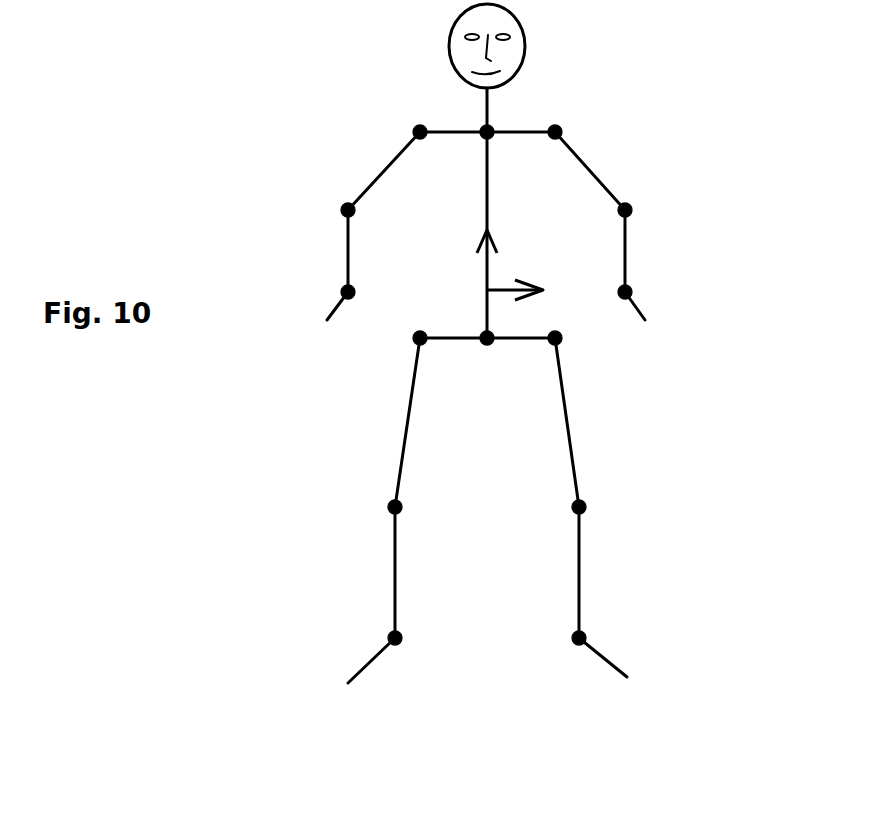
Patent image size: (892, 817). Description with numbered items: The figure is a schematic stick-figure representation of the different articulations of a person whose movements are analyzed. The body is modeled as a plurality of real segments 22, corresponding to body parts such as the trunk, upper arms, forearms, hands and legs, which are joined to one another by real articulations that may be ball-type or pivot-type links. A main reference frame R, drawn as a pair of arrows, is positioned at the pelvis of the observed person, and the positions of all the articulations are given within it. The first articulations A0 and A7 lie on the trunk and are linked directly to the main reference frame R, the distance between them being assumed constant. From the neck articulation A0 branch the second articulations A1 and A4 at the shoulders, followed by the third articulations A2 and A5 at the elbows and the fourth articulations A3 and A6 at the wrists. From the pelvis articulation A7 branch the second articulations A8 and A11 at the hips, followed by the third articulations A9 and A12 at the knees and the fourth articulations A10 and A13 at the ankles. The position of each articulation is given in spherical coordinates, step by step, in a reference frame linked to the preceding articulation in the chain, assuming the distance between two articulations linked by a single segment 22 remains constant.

The real segment 22 is at (620, 164).
The main reference frame R is at (487, 268).
The first articulation A0 is at (500, 126).
The second articulation A1 is at (415, 128).
The third articulation A2 is at (343, 212).
The fourth articulation A3 is at (343, 294).
The second articulation A4 is at (567, 127).
The third articulation A5 is at (633, 212).
The fourth articulation A6 is at (635, 297).
The first articulation A7 is at (488, 346).
The second articulation A8 is at (415, 340).
The third articulation A9 is at (390, 508).
The fourth articulation A10 is at (390, 642).
The second articulation A11 is at (565, 340).
The third articulation A12 is at (588, 512).
The fourth articulation A13 is at (590, 645).